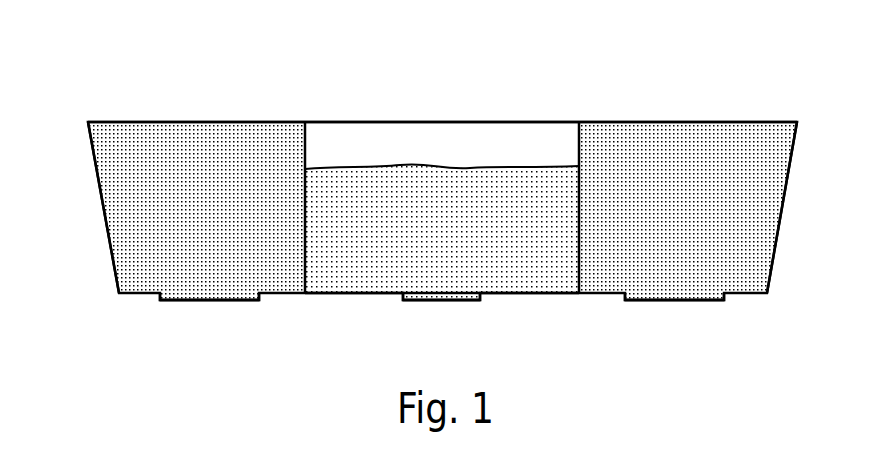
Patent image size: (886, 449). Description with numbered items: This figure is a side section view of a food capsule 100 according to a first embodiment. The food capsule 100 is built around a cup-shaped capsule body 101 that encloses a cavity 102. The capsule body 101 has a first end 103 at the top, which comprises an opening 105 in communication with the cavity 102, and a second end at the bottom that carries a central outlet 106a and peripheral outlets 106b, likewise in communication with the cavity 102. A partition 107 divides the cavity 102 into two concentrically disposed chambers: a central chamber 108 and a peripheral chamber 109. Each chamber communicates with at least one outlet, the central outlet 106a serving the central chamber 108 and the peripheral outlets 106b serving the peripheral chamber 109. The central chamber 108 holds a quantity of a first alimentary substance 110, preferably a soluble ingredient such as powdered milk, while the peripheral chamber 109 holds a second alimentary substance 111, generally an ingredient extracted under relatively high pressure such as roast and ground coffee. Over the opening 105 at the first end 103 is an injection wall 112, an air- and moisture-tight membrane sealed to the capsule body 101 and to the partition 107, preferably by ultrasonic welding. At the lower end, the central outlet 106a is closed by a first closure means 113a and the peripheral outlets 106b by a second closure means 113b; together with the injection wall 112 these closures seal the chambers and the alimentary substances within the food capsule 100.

The food capsule 100 is at (97, 218).
The capsule body 101 is at (800, 208).
The cavity 102 is at (363, 284).
The first end 103 is at (528, 66).
The opening 105 is at (372, 121).
The central outlet 106a is at (453, 281).
The peripheral outlets 106b is at (191, 294).
The partition 107 is at (595, 130).
The central chamber 108 is at (459, 128).
The peripheral chamber 109 is at (163, 133).
The first alimentary substance 110 is at (390, 295).
The second alimentary substance 111 is at (115, 188).
The injection wall 112 is at (232, 100).
The first closure means 113a is at (443, 312).
The second closure means 113b is at (203, 322).